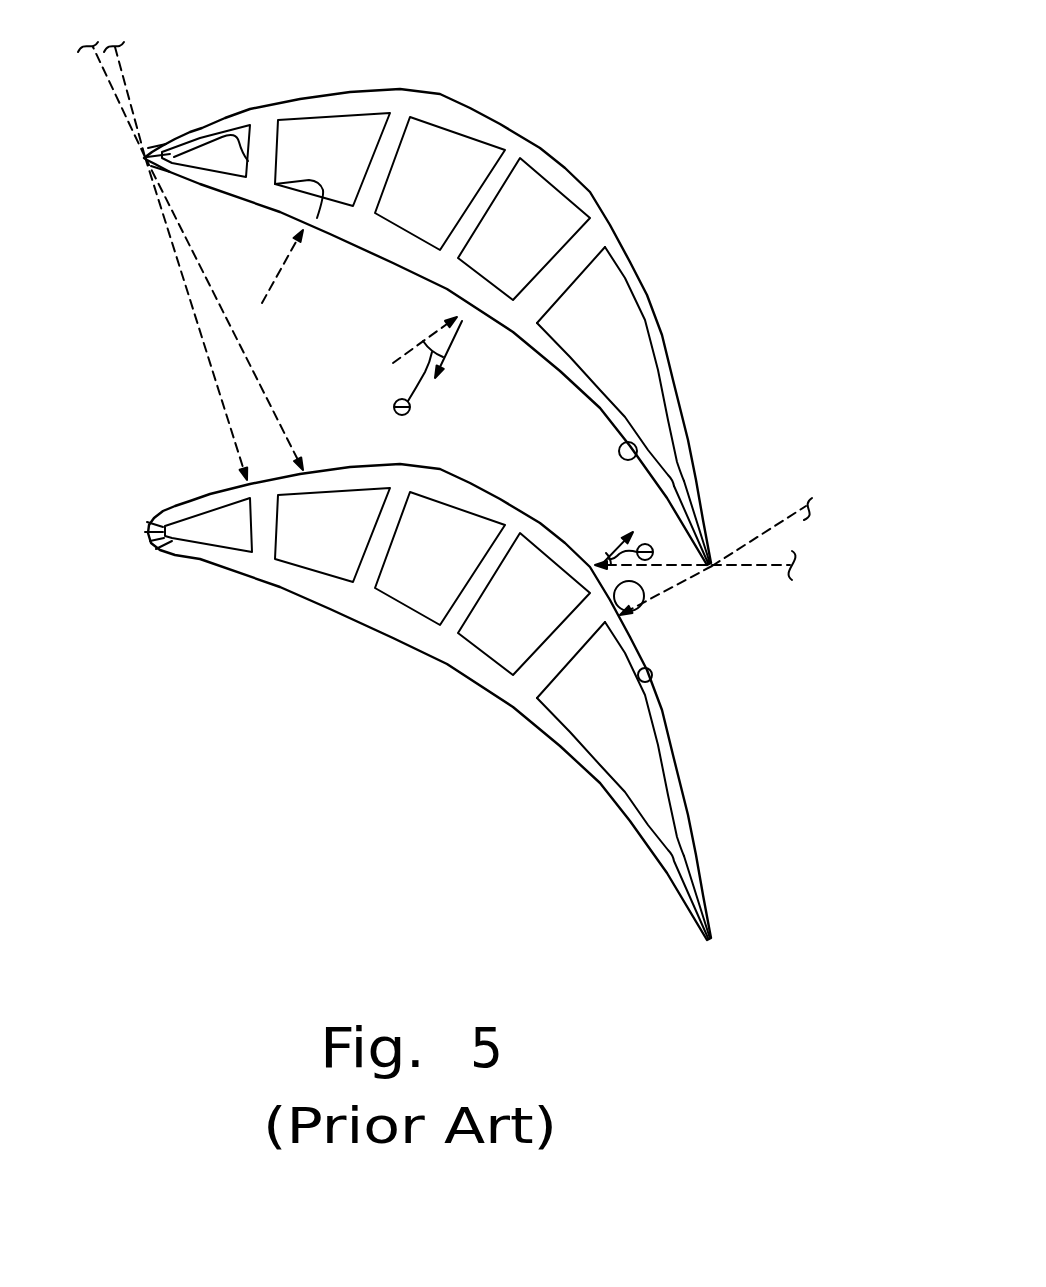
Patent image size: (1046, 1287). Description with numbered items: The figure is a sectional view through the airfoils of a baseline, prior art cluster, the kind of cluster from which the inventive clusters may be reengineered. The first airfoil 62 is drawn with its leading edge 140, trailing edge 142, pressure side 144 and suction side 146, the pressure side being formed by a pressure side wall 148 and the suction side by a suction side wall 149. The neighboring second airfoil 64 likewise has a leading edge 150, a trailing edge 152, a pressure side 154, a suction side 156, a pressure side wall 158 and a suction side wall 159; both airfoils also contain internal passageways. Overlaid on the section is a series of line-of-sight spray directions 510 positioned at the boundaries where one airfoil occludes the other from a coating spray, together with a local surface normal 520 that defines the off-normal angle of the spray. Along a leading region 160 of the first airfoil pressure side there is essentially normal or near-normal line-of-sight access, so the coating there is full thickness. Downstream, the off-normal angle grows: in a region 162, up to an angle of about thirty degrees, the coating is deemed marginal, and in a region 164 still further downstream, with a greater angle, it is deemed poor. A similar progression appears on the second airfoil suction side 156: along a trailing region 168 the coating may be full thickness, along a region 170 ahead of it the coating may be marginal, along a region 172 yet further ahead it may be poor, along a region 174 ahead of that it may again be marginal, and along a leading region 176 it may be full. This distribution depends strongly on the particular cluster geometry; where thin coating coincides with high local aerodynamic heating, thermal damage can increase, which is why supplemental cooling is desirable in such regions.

The first airfoil 62 is at (442, 317).
The second airfoil 64 is at (436, 520).
The leading edge 140 is at (145, 161).
The trailing edge 142 is at (712, 568).
The pressure side 144 is at (633, 444).
The suction side 146 is at (660, 326).
The pressure side wall 148 is at (628, 281).
The suction side wall 149 is at (578, 368).
The leading edge 150 is at (150, 548).
The trailing edge 152 is at (714, 943).
The pressure side 154 is at (567, 765).
The suction side 156 is at (638, 677).
The pressure side wall 158 is at (656, 848).
The suction side wall 159 is at (657, 733).
The leading region 160 is at (227, 136).
The marginal coating region 162 is at (312, 230).
The poor coating region 164 is at (470, 313).
The trailing region 168 is at (712, 926).
The marginal coating region 170 is at (642, 607).
The poor coating region 172 is at (306, 470).
The marginal coating region 174 is at (303, 477).
The leading region 176 is at (246, 483).
The line-of-sight spray directions 510 is at (288, 267).
The local surface normal 520 is at (456, 334).